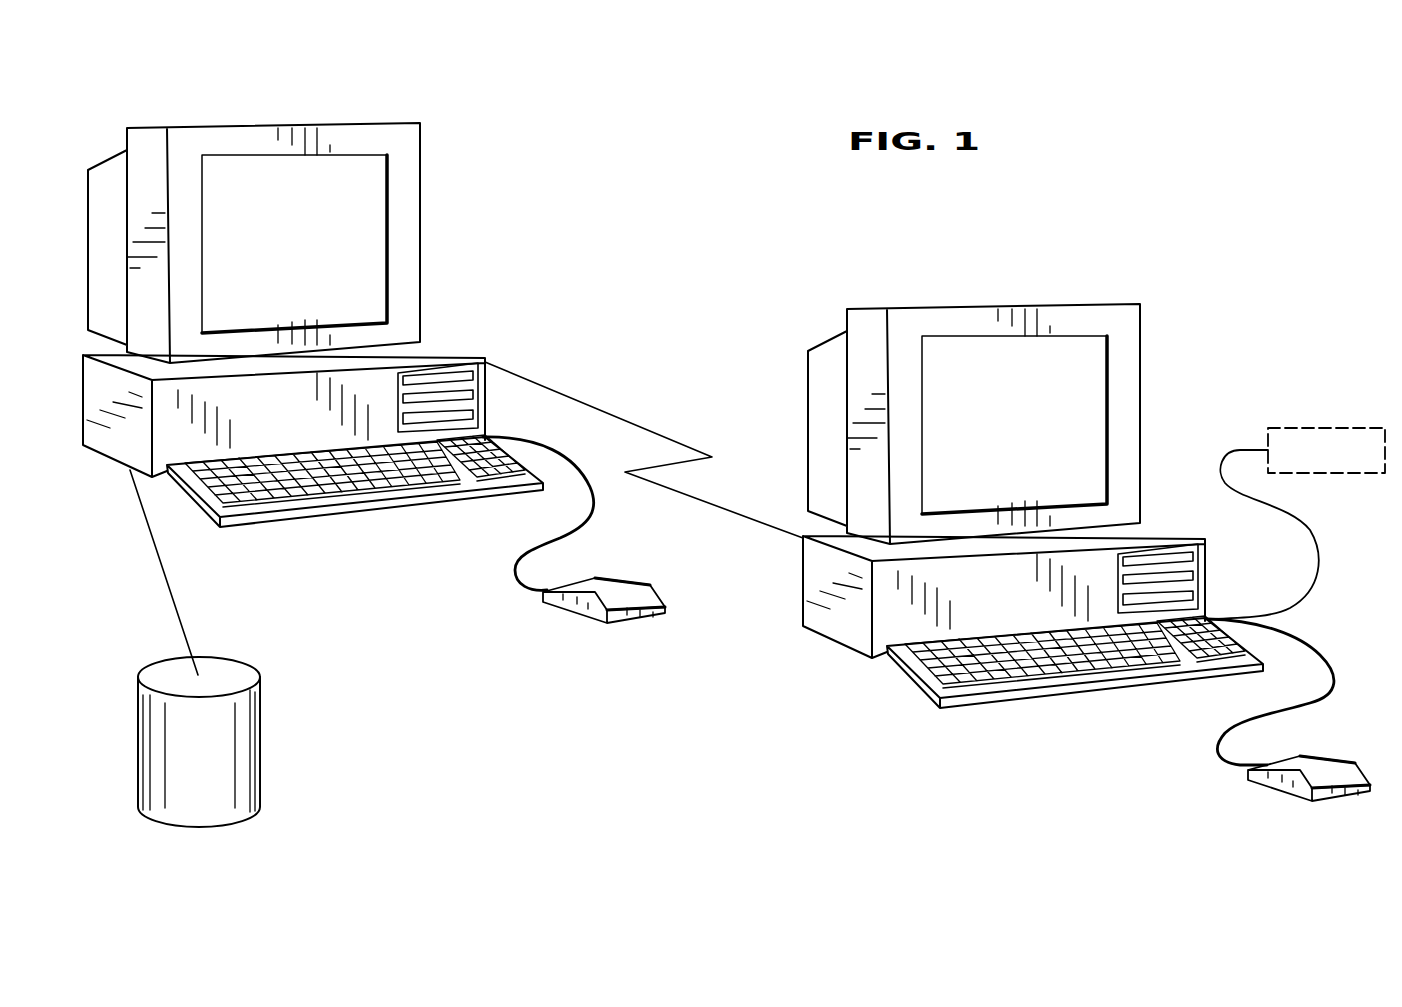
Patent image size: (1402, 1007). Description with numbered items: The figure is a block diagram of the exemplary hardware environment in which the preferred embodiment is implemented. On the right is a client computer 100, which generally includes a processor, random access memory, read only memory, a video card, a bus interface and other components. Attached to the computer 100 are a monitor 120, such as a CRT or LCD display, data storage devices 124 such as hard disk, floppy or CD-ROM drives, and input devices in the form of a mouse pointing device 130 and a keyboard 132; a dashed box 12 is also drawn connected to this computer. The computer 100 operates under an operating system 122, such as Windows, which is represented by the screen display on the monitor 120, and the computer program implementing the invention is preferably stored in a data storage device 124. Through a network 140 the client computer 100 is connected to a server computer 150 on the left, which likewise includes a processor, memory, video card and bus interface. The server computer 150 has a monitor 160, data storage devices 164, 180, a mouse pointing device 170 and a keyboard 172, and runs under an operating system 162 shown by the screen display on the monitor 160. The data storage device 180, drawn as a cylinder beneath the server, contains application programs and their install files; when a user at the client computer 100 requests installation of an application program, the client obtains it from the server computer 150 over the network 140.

The external device 12 is at (1305, 428).
The computer 100 is at (1086, 515).
The monitor 120 is at (999, 399).
The operating system 122 is at (1056, 425).
The data storage devices 124 is at (1195, 578).
The mouse pointing device 130 is at (1288, 722).
The keyboard 132 is at (1065, 674).
The network 140 is at (628, 422).
The server computer 150 is at (195, 103).
The monitor 160 is at (358, 125).
The operating system 162 is at (370, 262).
The data storage devices 164 is at (473, 408).
The mouse pointing device 170 is at (645, 623).
The keyboard 172 is at (334, 507).
The data storage device 180 is at (243, 750).